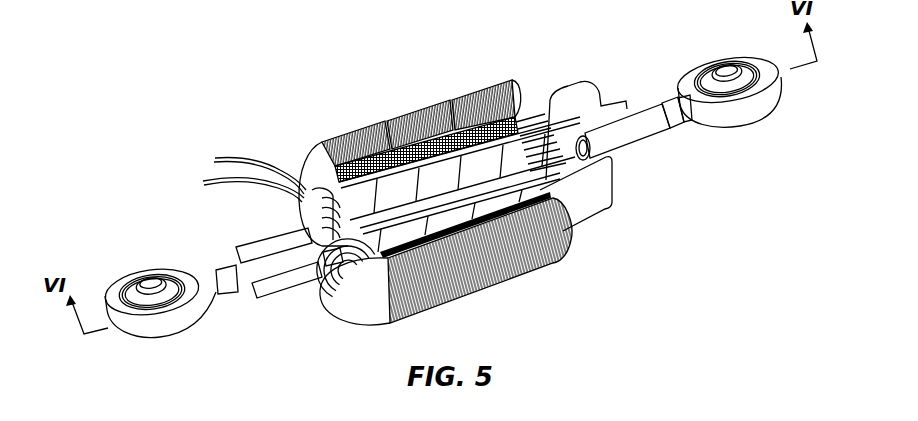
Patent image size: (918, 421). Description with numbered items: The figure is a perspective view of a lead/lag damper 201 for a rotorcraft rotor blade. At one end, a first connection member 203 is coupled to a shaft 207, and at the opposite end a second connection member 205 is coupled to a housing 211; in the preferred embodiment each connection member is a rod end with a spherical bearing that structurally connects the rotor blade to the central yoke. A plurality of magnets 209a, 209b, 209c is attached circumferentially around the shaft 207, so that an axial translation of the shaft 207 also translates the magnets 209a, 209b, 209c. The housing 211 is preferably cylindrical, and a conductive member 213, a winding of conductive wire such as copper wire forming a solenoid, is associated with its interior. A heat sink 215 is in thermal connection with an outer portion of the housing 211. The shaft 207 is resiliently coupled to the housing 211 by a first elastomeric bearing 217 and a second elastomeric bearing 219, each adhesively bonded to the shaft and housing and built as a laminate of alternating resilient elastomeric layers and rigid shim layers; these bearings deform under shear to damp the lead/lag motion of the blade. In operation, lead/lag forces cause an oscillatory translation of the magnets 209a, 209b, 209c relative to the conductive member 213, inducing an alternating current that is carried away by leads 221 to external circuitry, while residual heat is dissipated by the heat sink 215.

The lead/lag damper 201 is at (165, 96).
The first connection member 203 is at (187, 333).
The second connection member 205 is at (722, 128).
The shaft 207 is at (552, 136).
The magnet 209a is at (322, 192).
The magnet 209b is at (396, 194).
The magnet 209c is at (460, 198).
The housing 211 is at (612, 207).
The conductive member 213 is at (512, 140).
The heat sink 215 is at (480, 148).
The first elastomeric bearing 217 is at (308, 224).
The second elastomeric bearing 219 is at (542, 150).
The leads 221 is at (212, 184).